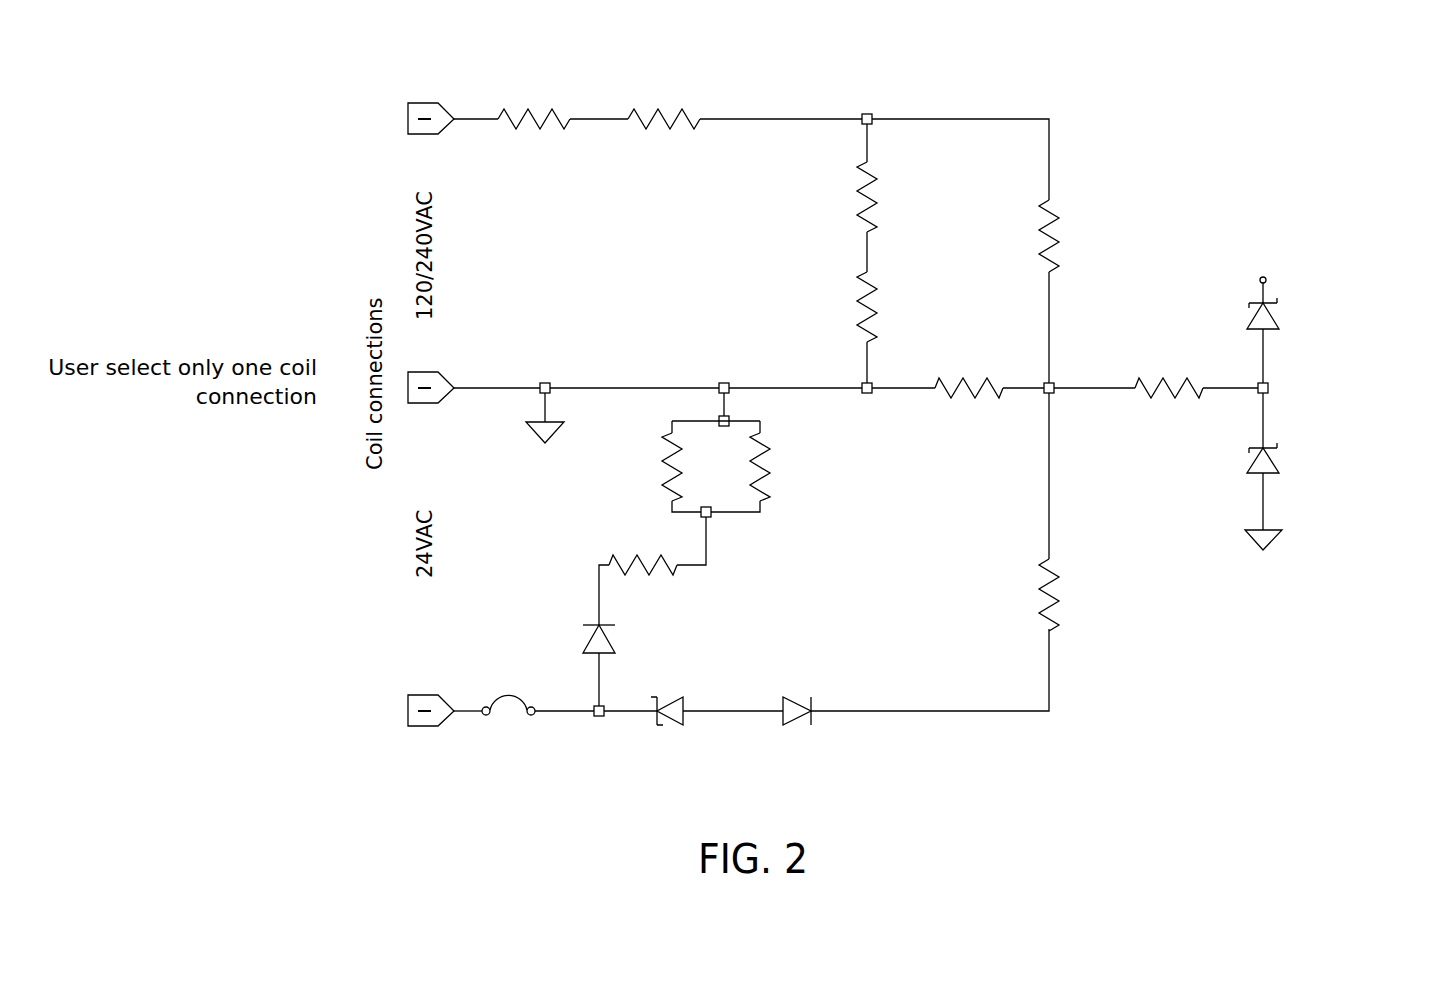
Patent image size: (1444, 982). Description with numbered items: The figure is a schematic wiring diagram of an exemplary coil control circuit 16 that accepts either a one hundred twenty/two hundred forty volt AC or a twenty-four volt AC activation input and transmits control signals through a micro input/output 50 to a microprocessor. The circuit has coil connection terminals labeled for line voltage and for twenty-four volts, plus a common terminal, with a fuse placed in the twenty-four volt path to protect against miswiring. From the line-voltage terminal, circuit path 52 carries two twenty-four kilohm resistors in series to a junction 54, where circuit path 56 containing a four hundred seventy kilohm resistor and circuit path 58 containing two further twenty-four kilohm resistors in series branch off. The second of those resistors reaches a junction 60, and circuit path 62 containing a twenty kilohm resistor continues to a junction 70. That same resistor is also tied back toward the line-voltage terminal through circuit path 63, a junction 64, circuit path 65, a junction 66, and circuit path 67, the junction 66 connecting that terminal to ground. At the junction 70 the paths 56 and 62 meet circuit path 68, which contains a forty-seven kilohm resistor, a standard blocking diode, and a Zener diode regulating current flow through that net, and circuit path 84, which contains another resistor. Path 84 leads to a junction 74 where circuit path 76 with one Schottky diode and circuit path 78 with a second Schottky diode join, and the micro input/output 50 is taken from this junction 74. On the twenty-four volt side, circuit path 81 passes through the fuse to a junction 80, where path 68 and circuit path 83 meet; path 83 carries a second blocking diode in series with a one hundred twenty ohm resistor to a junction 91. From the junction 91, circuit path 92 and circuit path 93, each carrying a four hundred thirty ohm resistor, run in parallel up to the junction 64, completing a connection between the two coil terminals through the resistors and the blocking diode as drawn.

The coil control circuit 16 is at (1185, 131).
The micro input/output 50 is at (1378, 380).
The circuit path 52 is at (779, 113).
The junction 54 is at (868, 113).
The circuit path 56 is at (1007, 113).
The circuit path 58 is at (869, 248).
The junction 60 is at (866, 396).
The circuit path 62 is at (920, 396).
The circuit path 63 is at (771, 385).
The junction 64 is at (725, 380).
The circuit path 65 is at (635, 385).
The junction 66 is at (545, 380).
The circuit path 67 is at (497, 385).
The circuit path 68 is at (947, 714).
The junction 70 is at (1052, 393).
The junction 74 is at (1269, 384).
The circuit path 76 is at (1265, 500).
The circuit path 78 is at (1258, 357).
The junction 80 is at (599, 716).
The circuit path 81 is at (548, 714).
The circuit path 83 is at (600, 565).
The circuit path 84 is at (1095, 385).
The junction 91 is at (709, 517).
The circuit path 92 is at (760, 516).
The circuit path 93 is at (670, 509).